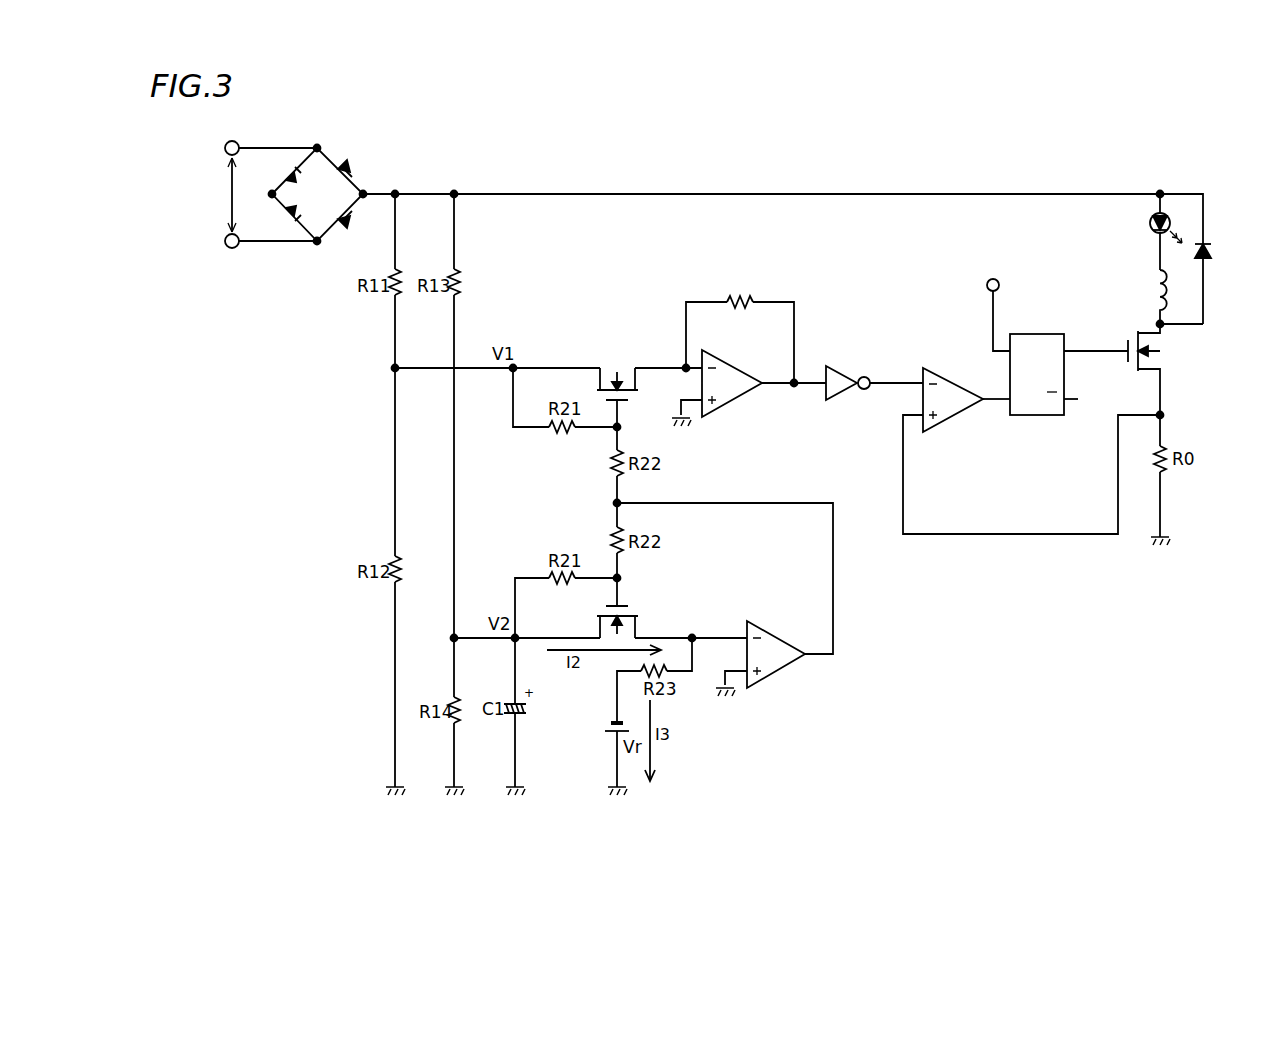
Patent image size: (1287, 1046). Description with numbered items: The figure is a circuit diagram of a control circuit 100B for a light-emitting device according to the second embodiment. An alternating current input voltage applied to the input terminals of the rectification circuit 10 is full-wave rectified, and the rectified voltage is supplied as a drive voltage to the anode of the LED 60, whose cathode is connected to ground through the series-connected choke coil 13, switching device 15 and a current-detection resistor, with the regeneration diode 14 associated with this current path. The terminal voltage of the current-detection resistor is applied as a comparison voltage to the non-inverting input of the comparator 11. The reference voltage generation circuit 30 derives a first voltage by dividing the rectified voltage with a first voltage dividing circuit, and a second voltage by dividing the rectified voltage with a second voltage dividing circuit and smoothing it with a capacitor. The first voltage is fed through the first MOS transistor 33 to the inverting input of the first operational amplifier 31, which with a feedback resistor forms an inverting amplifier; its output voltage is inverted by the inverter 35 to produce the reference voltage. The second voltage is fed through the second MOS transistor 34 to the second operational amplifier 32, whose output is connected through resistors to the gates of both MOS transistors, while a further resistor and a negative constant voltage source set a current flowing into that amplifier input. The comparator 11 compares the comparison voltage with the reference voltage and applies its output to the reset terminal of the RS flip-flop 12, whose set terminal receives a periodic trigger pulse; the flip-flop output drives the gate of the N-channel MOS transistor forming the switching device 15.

The control circuit 100B is at (921, 180).
The rectification circuit 10 is at (353, 167).
The reference voltage generation circuit 30 is at (795, 286).
The first operational amplifier 31 is at (745, 402).
The second operational amplifier 32 is at (767, 622).
The first MOS transistor 33 is at (605, 360).
The second MOS transistor 34 is at (637, 603).
The inverter 35 is at (843, 402).
The comparator 11 is at (948, 372).
The RS flip-flop 12 is at (1045, 332).
The choke coil 13 is at (1152, 296).
The regeneration diode 14 is at (1214, 250).
The switching device 15 is at (1172, 352).
The LED 60 is at (1149, 225).